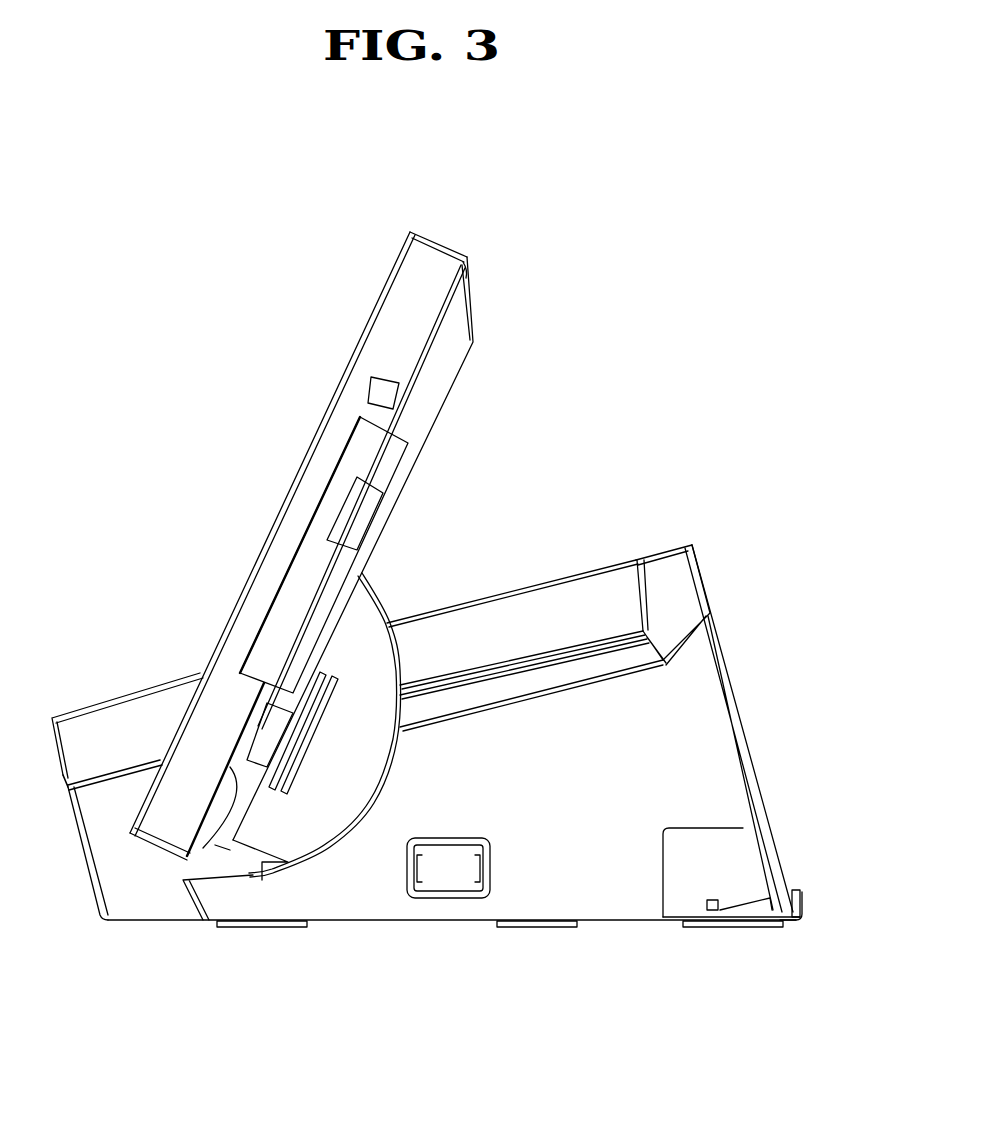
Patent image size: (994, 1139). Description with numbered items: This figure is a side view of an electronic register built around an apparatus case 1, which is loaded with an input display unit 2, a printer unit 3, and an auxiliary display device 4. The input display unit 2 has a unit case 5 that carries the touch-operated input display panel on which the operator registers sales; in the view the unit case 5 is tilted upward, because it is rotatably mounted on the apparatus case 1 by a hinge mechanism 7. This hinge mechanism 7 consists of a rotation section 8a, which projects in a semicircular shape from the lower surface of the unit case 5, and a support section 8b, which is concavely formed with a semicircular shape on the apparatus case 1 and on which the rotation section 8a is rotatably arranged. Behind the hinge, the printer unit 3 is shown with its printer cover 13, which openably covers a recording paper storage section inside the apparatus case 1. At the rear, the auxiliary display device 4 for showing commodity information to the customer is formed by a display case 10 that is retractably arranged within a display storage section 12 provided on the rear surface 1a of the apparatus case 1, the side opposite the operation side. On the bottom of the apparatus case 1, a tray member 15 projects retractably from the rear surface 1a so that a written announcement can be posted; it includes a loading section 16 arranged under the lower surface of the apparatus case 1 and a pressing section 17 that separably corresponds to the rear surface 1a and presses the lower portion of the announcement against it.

The apparatus case 1 is at (533, 900).
The rear surface 1a is at (755, 768).
The input display unit 2 is at (301, 506).
The printer unit 3 is at (526, 588).
The auxiliary display device 4 is at (740, 678).
The unit case 5 is at (362, 370).
The hinge mechanism 7 is at (302, 823).
The rotation section 8a is at (273, 833).
The support section 8b is at (323, 850).
The display case 10 is at (677, 583).
The display storage section 12 is at (642, 590).
The printer cover 13 is at (540, 608).
The tray member 15 is at (805, 945).
The loading section 16 is at (728, 925).
The pressing section 17 is at (803, 910).